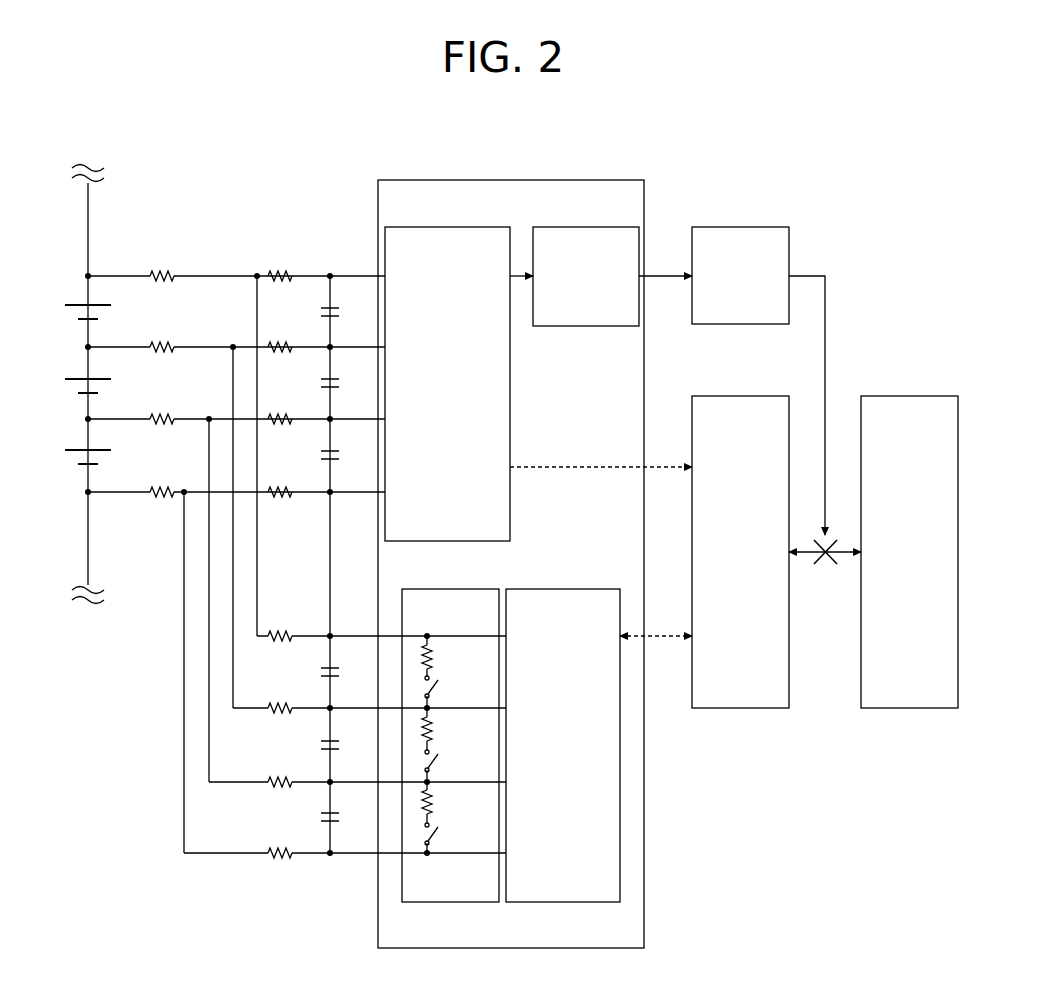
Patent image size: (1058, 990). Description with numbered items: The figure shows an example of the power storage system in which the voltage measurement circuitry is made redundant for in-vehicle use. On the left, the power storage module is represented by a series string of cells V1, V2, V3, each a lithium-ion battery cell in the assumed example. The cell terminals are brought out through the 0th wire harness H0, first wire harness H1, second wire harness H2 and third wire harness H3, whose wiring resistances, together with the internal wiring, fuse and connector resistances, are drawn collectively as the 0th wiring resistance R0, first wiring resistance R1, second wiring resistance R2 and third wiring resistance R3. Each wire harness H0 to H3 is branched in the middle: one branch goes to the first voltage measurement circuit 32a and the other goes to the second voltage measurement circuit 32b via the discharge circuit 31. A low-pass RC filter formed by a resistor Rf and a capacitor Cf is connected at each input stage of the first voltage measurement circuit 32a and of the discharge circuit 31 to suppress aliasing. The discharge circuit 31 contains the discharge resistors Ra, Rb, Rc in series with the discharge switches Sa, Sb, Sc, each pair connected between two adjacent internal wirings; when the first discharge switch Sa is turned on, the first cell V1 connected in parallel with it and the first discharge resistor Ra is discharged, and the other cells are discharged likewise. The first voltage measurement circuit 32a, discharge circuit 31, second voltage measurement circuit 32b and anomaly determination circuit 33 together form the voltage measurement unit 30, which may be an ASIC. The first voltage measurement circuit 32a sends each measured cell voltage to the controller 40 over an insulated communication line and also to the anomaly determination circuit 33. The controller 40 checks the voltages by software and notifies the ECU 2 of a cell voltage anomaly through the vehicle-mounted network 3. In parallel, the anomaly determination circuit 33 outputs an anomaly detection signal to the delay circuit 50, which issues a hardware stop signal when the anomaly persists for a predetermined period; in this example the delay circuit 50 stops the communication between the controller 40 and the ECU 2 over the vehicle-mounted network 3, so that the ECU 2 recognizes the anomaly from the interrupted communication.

The electronic control unit 2 is at (930, 396).
The vehicle-mounted network 3 is at (836, 546).
The voltage measurement unit 30 is at (608, 180).
The discharge circuit 31 is at (450, 723).
The first voltage measurement circuit 32a is at (465, 227).
The second voltage measurement circuit 32b is at (585, 589).
The anomaly determination circuit 33 is at (578, 227).
The controller 40 is at (757, 396).
The delay circuit 50 is at (757, 227).
The 0th wire harness H0 is at (110, 275).
The first wire harness H1 is at (110, 346).
The second wire harness H2 is at (110, 418).
The third wire harness H3 is at (110, 491).
The 0th wiring resistance R0 is at (162, 266).
The first wiring resistance R1 is at (162, 338).
The second wiring resistance R2 is at (162, 410).
The third wiring resistance R3 is at (162, 483).
The resistor Rf is at (280, 555).
The capacitor Cf is at (339, 564).
The first cell V1 is at (78, 315).
The second cell V2 is at (78, 389).
The third cell V3 is at (78, 460).
The first discharge resistor Ra is at (439, 657).
The second discharge resistor Rb is at (439, 729).
The third discharge resistor Rc is at (438, 802).
The first discharge switch Sa is at (440, 687).
The second discharge switch Sb is at (440, 761).
The third discharge switch Sc is at (439, 834).